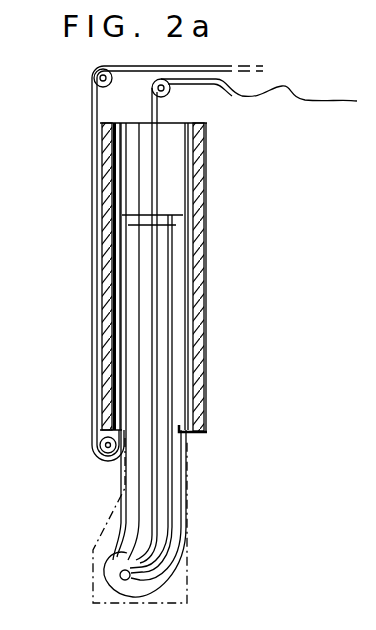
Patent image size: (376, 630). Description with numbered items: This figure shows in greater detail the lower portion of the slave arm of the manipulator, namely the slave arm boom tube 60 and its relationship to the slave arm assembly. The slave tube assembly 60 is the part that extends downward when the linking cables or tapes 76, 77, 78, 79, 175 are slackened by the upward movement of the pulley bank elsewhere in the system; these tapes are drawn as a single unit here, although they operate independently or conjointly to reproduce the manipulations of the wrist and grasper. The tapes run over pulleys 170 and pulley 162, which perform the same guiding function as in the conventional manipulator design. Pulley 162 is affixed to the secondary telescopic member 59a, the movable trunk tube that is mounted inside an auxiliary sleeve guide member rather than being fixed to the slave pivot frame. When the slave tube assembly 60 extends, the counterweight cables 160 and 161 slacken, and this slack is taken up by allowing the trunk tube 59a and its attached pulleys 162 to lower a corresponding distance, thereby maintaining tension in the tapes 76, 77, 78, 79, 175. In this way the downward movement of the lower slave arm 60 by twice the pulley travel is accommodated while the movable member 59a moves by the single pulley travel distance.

The counterweight cable 160 is at (92, 291).
The counterweight cable 161 is at (105, 276).
The secondary telescopic member 59a is at (203, 313).
The pulley 170 is at (106, 70).
The pulley 162 is at (103, 458).
The slave arm boom tube 60 is at (190, 483).
The linking tape 76 is at (357, 110).
The linking tape 77 is at (244, 341).
The linking tape 78 is at (249, 341).
The linking tape 79 is at (253, 384).
The linking tape 175 is at (240, 403).